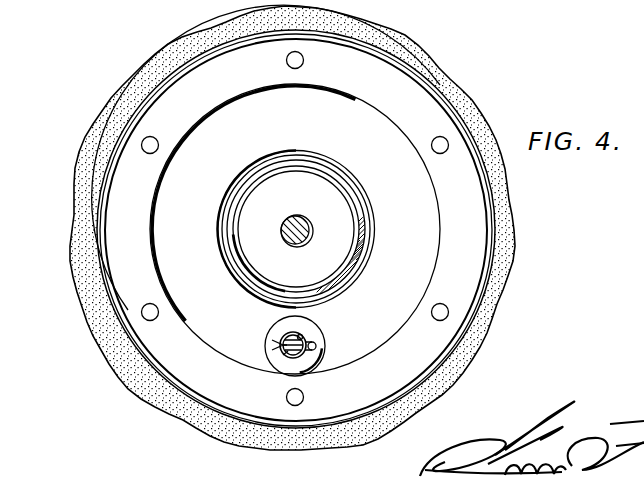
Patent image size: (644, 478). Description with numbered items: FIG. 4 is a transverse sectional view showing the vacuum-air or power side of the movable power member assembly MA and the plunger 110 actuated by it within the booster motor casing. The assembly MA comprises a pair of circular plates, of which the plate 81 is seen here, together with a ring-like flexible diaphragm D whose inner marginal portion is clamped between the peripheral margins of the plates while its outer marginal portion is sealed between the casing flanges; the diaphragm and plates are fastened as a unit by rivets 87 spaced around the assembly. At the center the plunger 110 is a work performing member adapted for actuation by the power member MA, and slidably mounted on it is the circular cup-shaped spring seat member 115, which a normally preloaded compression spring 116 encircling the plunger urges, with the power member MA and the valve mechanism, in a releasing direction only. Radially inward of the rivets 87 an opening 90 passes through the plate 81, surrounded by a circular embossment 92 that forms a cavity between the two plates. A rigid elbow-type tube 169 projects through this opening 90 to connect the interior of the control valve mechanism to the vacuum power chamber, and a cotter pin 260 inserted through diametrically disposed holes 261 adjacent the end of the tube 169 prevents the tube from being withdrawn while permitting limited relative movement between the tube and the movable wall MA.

The power member assembly MA is at (158, 46).
The flexible diaphragm D is at (444, 49).
The circular plate 81 is at (432, 103).
The rivets 87 is at (305, 60).
The compression spring 116 is at (347, 186).
The spring seat member 115 is at (362, 211).
The plunger 110 is at (308, 223).
The circular embossment 92 is at (302, 335).
The opening 90 is at (304, 342).
The elbow-type tube 169 is at (318, 349).
The cotter pin 260 is at (278, 340).
The holes 261 is at (283, 355).